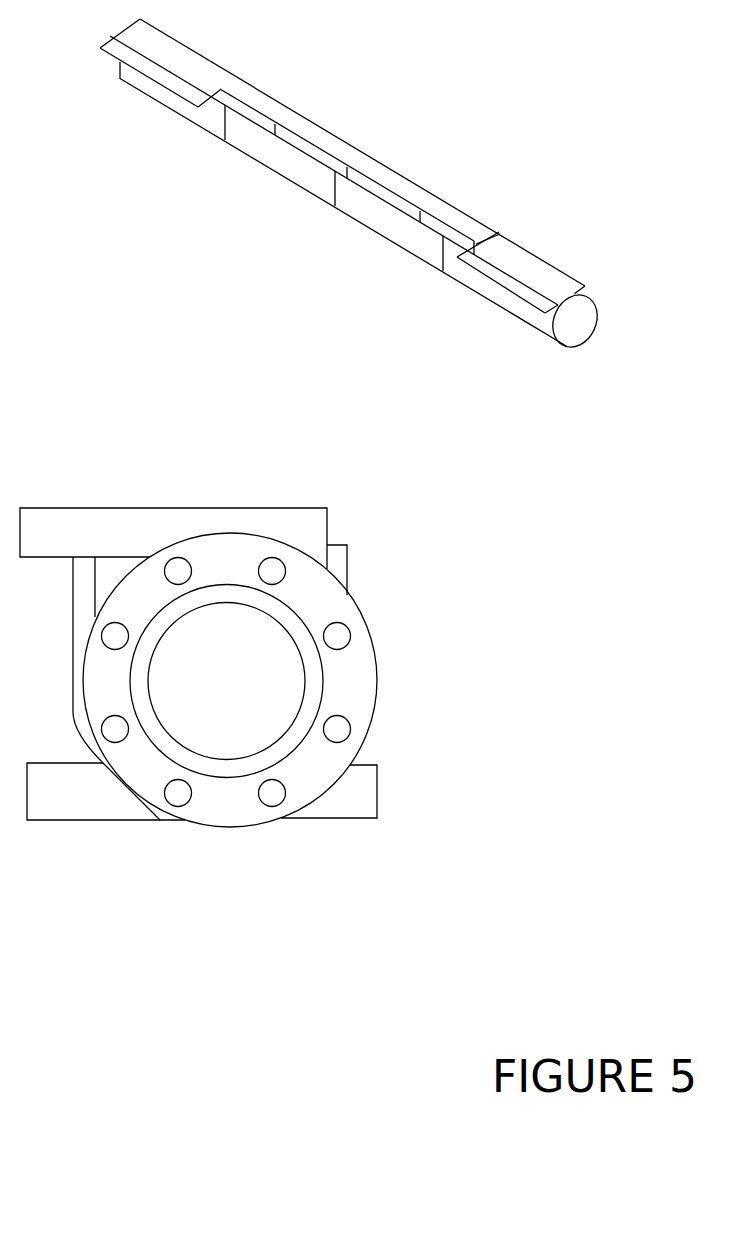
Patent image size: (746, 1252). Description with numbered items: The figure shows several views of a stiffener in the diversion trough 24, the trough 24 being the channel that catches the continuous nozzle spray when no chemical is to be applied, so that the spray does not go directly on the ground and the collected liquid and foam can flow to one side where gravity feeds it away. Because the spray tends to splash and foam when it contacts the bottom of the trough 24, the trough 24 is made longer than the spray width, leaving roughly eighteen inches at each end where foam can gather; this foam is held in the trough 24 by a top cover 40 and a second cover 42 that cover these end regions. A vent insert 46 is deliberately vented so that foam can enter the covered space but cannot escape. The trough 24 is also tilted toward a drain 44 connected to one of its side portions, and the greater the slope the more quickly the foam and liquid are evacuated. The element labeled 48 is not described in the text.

The trough 24 is at (358, 183).
The cover 40 is at (192, 68).
The second cover 42 is at (510, 258).
The drain 44 is at (599, 320).
The vent insert 46 is at (260, 97).
The notch 48 is at (475, 238).